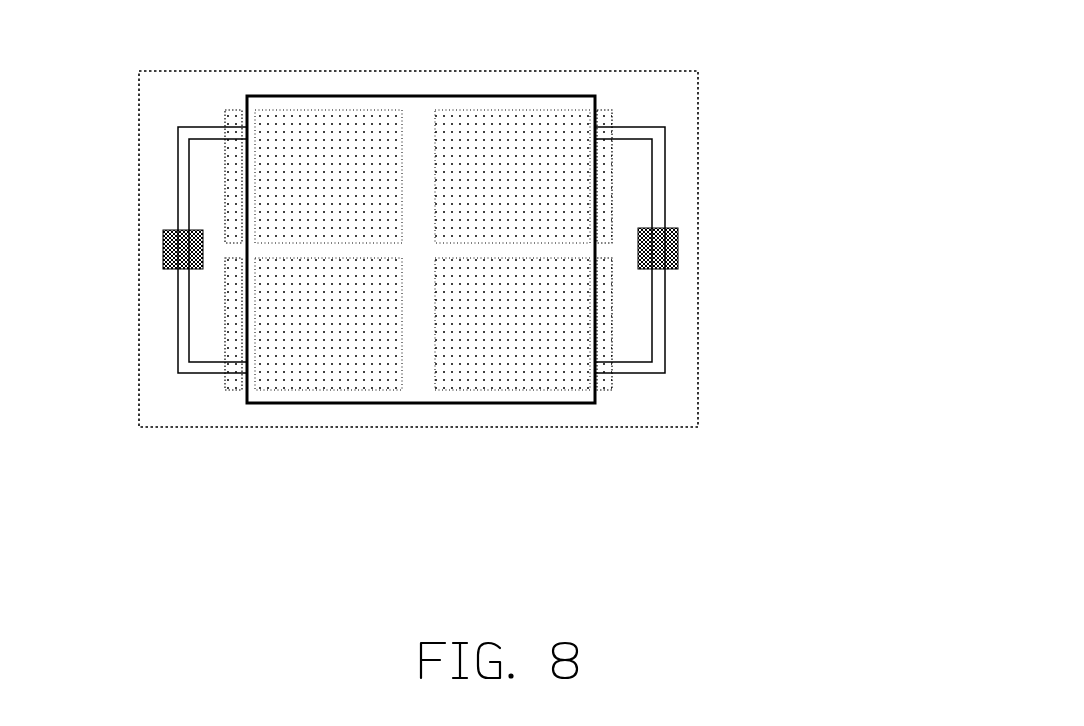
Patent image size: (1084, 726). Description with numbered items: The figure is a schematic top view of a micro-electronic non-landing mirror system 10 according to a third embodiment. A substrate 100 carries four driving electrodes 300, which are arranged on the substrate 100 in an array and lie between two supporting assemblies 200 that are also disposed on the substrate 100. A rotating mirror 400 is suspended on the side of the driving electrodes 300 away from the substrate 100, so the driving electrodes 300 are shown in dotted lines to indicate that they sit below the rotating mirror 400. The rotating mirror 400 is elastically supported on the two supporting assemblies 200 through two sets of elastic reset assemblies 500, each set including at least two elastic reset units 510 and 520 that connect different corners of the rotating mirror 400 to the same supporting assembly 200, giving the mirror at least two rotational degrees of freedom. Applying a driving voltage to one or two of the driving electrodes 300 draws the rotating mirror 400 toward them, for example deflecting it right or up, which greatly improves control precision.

The micro-electronic non-landing mirror system 10 is at (680, 44).
The substrate 100 is at (655, 408).
The supporting assembly 200 is at (183, 250).
The driving electrode 300 is at (607, 342).
The rotating mirror 400 is at (468, 347).
The elastic reset assembly 500 is at (550, 250).
The elastic reset unit 510 is at (655, 310).
The elastic reset unit 520 is at (663, 185).